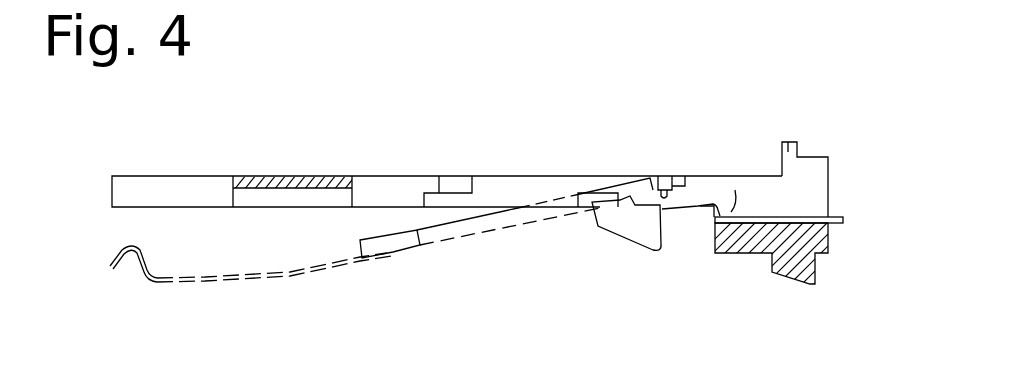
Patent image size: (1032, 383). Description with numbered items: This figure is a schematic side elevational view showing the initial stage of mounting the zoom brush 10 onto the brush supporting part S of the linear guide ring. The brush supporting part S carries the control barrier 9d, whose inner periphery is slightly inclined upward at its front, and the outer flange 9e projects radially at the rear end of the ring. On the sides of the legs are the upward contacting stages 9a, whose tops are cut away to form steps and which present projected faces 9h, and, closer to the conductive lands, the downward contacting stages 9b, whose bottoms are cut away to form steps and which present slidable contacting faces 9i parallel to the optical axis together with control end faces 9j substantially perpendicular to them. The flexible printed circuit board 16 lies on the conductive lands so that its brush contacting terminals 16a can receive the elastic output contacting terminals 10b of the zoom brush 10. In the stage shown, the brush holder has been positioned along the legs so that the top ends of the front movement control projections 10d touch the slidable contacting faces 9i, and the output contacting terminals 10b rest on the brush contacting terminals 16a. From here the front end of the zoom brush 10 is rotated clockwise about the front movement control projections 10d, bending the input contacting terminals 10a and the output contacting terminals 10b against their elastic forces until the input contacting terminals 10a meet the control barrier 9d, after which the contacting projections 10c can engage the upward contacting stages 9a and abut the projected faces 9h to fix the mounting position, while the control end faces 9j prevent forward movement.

The upward contacting stages 9a is at (433, 176).
The downward contacting stages 9b is at (610, 176).
The control barrier 9d is at (290, 176).
The outer flange 9e is at (788, 150).
The projected faces 9h is at (452, 176).
The slidable contacting faces 9i is at (663, 176).
The control end faces 9j is at (682, 177).
The zoom brush 10 is at (468, 247).
The input contacting terminals 10a is at (177, 282).
The output contacting terminals 10b is at (738, 190).
The contacting projections 10c is at (385, 253).
The front movement control projections 10d is at (620, 206).
The flexible printed circuit board 16 is at (835, 217).
The brush contacting terminals 16a is at (793, 217).
The brush supporting part S is at (528, 158).